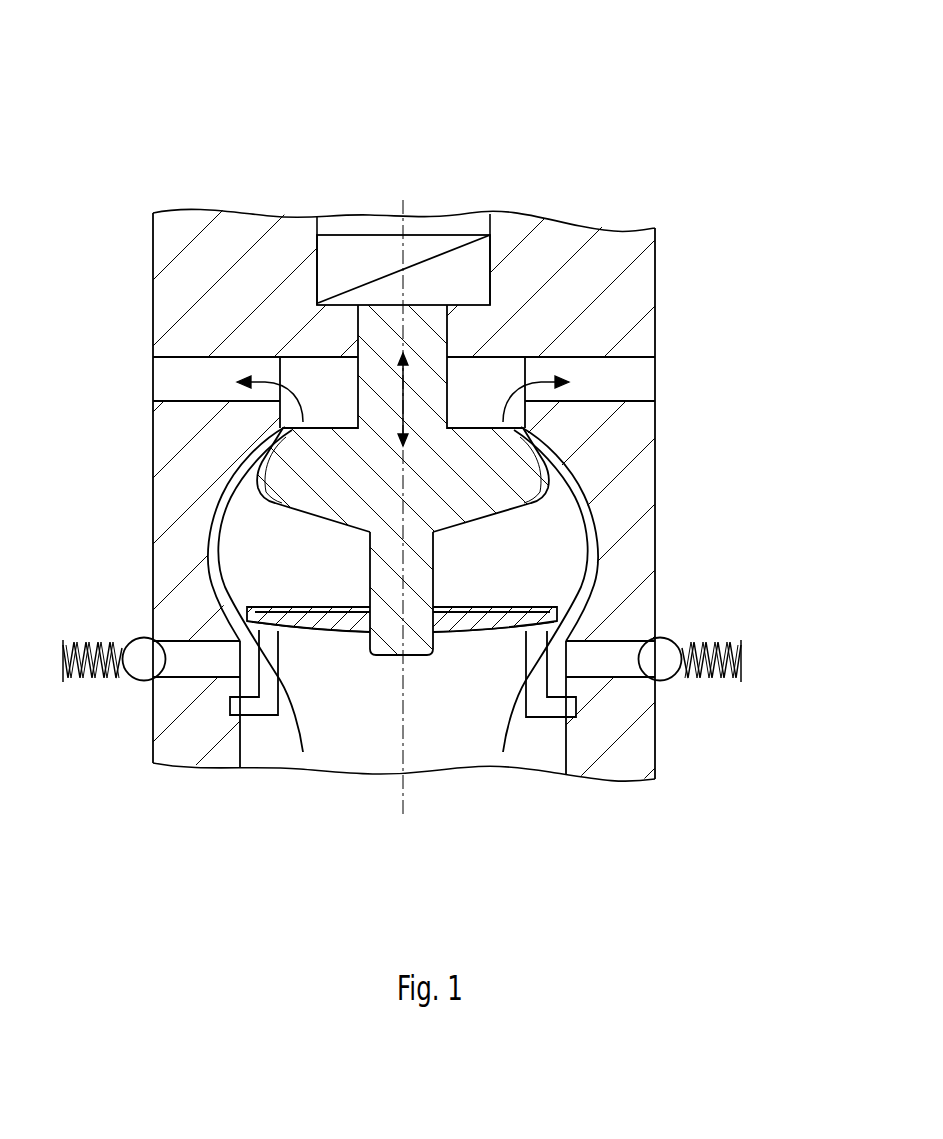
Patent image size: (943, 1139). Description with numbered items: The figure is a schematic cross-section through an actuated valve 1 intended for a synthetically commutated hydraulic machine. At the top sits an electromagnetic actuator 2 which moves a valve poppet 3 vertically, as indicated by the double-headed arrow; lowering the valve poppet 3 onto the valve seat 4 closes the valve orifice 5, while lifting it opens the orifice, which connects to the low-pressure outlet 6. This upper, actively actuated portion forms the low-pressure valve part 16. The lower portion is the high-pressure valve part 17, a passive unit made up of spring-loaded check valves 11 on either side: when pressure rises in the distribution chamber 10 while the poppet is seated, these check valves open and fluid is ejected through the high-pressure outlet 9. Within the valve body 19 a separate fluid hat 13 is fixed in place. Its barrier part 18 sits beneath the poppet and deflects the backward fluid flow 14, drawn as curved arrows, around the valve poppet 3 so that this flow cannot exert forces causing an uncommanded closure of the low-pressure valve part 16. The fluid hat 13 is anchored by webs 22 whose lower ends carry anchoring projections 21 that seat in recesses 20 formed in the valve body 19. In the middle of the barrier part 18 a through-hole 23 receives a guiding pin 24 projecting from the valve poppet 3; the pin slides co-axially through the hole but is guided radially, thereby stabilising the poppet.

The actuated valve 1 is at (695, 188).
The actuator 2 is at (425, 248).
The valve poppet 3 is at (549, 470).
The valve seat 4 is at (283, 445).
The valve orifice 5 is at (275, 437).
The low-pressure outlet 6 is at (657, 380).
The high-pressure outlet 9 is at (200, 657).
The distribution chamber 10 is at (458, 745).
The spring-loaded check valves 11 is at (128, 682).
The fluid hat 13 is at (560, 612).
The backward fluid flow 14 is at (600, 530).
The low-pressure valve part 16 is at (677, 355).
The high-pressure valve part 17 is at (683, 710).
The barrier part 18 is at (347, 633).
The valve body 19 is at (640, 570).
The recesses 20 is at (263, 717).
The anchoring projections 21 is at (540, 717).
The webs 22 is at (530, 648).
The through-hole 23 is at (372, 598).
The guiding pin 24 is at (436, 574).